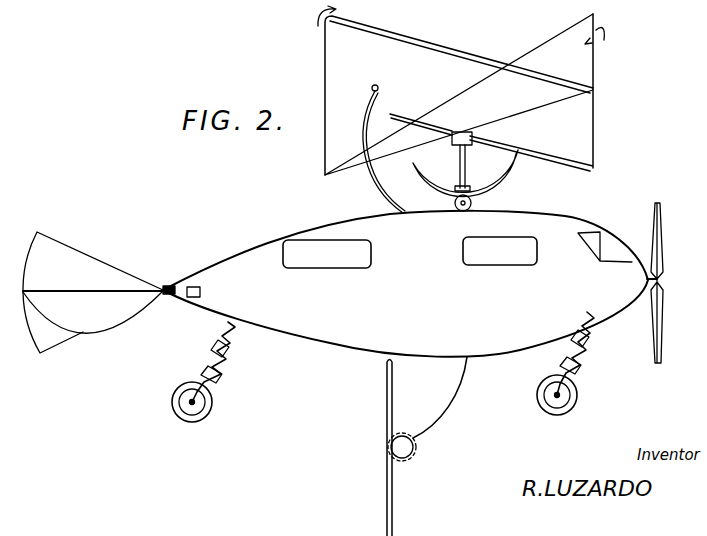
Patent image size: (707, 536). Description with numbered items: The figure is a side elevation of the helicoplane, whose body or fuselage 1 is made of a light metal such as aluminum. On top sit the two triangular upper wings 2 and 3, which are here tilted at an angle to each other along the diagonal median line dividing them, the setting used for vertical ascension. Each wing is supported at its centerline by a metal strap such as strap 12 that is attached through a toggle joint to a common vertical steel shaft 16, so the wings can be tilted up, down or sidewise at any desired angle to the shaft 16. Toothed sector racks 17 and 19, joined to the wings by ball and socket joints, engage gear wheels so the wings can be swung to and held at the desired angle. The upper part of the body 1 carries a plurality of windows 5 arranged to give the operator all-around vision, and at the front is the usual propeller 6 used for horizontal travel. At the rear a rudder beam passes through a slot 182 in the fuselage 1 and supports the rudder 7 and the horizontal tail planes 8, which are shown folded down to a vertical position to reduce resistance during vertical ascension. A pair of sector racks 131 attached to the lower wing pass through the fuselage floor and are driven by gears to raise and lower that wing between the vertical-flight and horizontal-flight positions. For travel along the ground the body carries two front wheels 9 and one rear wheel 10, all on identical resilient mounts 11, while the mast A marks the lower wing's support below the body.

The body or fuselage 1 is at (405, 284).
The upper wing 2 is at (330, 72).
The upper wing 3 is at (593, 139).
The windows 5 is at (362, 251).
The propeller 6 is at (473, 203).
The rudder 7 is at (75, 258).
The horizontal tail planes 8 is at (112, 326).
The front wheels 9 is at (570, 400).
The rear wheel 10 is at (182, 408).
The resilient mounts 11 is at (222, 373).
The metal strap 12 is at (406, 121).
The vertical steel shaft 16 is at (460, 164).
The sector rack 17 is at (504, 167).
The sector rack 19 is at (377, 188).
The sector racks 131 is at (437, 418).
The slot 182 is at (170, 276).
The mast A is at (390, 468).